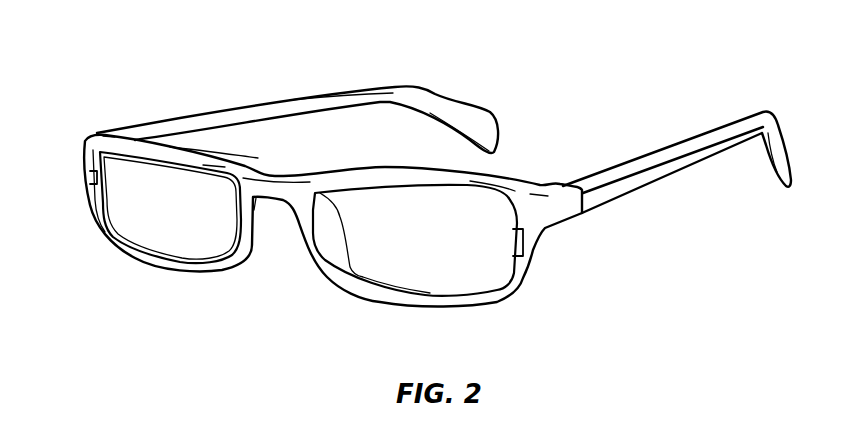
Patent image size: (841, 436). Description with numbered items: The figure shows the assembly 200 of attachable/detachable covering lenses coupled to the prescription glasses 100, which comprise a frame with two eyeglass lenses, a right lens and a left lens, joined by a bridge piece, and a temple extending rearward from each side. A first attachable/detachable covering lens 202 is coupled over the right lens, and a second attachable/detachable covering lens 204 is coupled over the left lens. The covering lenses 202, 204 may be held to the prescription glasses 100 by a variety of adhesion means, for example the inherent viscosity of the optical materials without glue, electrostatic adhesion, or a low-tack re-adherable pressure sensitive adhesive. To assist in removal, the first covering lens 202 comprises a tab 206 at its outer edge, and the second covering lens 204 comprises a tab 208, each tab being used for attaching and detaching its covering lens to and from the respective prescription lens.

The prescription glasses 100 is at (411, 86).
The eyewear 200 is at (629, 56).
The first attachable/detachable covering lens 202 is at (133, 214).
The second attachable/detachable covering lens 204 is at (455, 287).
The tab 206 is at (93, 184).
The tab 208 is at (526, 244).